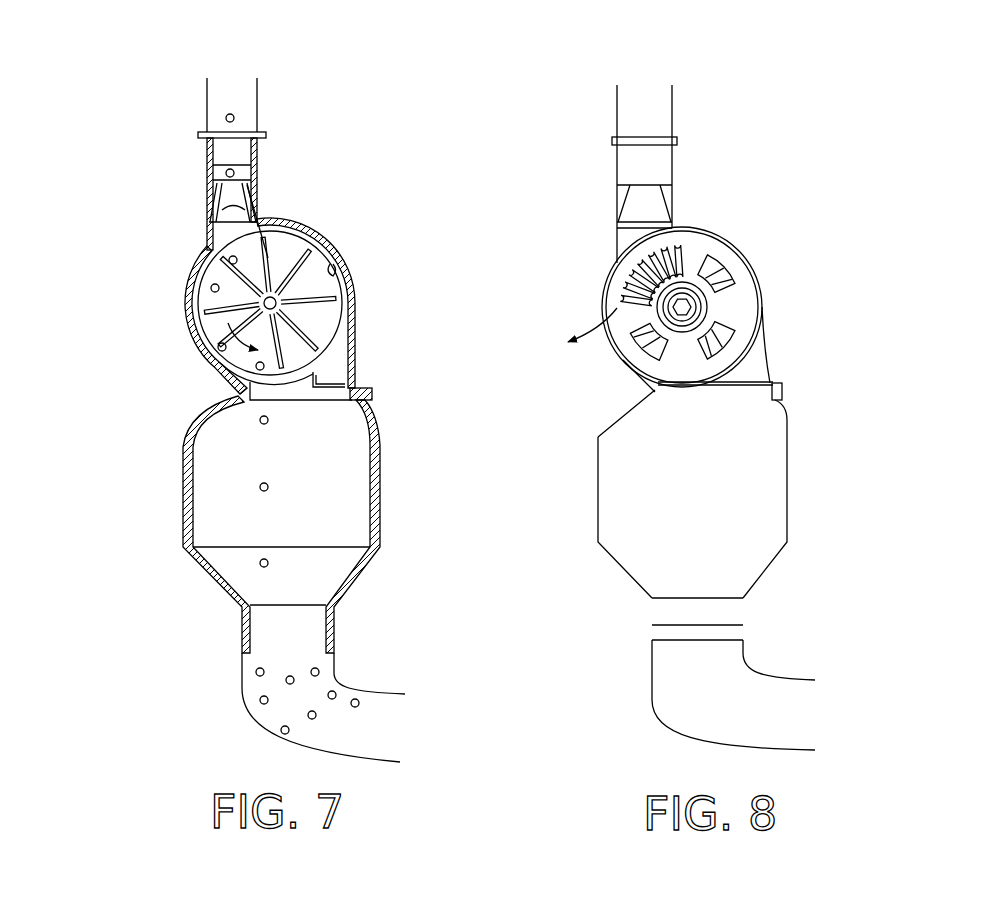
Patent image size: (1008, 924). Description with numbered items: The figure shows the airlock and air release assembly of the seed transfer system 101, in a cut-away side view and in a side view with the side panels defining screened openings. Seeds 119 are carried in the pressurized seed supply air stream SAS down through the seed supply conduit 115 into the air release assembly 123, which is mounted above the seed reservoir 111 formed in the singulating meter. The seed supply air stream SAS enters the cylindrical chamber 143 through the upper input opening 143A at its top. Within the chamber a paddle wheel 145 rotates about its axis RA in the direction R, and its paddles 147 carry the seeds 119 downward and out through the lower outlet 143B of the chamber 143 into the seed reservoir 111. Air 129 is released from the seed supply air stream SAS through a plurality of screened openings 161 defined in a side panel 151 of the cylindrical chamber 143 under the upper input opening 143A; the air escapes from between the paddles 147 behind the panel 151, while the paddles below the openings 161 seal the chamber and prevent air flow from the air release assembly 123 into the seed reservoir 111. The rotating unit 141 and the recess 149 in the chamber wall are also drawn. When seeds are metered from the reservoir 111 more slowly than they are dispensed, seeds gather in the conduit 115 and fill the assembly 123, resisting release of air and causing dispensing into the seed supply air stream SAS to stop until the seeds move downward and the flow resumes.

In FIG. 7, the system 101 is at (167, 200).
In FIG. 8, the system 101 is at (780, 158).
In FIG. 7, the seed reservoir 111 is at (340, 675).
In FIG. 8, the seed reservoir 111 is at (755, 666).
In FIG. 7, the seed supply conduit 115 is at (260, 103).
In FIG. 8, the seed supply conduit 115 is at (675, 110).
In FIG. 7, the seeds 119 is at (226, 118).
In FIG. 8, the air release assembly 123 is at (626, 268).
In FIG. 8, the air 129 is at (600, 342).
In FIG. 7, the rotor 141 is at (355, 245).
In FIG. 7, the cylindrical chamber 143 is at (303, 237).
In FIG. 7, the upper input opening 143A is at (247, 238).
In FIG. 7, the housing outlet 143B is at (248, 387).
In FIG. 7, the paddle wheel 145 is at (345, 345).
In FIG. 7, the paddles 147 is at (340, 313).
In FIG. 7, the housing recess 149 is at (333, 270).
In FIG. 8, the side panel 151 is at (743, 325).
In FIG. 8, the screened openings 161 is at (690, 245).
In FIG. 7, the seed supply air stream SAS is at (231, 106).
In FIG. 8, the seed supply air stream SAS is at (645, 112).
In FIG. 7, the rotation axis RA is at (263, 302).
In FIG. 7, the rotation direction R is at (203, 334).